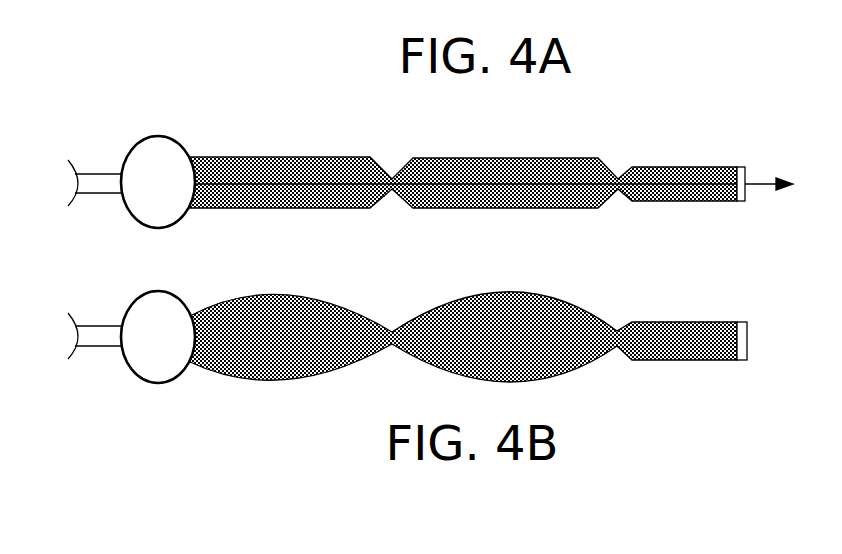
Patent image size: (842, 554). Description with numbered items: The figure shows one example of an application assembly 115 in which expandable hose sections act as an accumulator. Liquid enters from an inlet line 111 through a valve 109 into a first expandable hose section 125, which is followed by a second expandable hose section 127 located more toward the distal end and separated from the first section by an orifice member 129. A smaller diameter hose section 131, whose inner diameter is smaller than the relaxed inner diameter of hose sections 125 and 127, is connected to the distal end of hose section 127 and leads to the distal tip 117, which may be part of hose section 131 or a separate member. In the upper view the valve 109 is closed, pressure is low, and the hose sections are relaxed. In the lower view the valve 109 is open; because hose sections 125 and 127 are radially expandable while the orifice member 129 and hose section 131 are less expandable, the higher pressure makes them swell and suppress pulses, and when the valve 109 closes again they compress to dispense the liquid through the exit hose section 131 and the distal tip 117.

In FIG. 4A, the valve 109 is at (140, 220).
In FIG. 4B, the valve 109 is at (140, 375).
In FIG. 4A, the inlet tube 111 is at (103, 194).
In FIG. 4B, the inlet tube 111 is at (103, 347).
In FIG. 4A, the application assembly 115 is at (545, 147).
In FIG. 4B, the application assembly 115 is at (574, 282).
In FIG. 4A, the distal tip 117 is at (738, 165).
In FIG. 4B, the distal tip 117 is at (738, 323).
In FIG. 4A, the first expandable hose section 125 is at (318, 155).
In FIG. 4B, the first expandable hose section 125 is at (320, 298).
In FIG. 4A, the second expandable hose section 127 is at (465, 155).
In FIG. 4B, the second expandable hose section 127 is at (493, 292).
In FIG. 4A, the orifice member 129 is at (392, 176).
In FIG. 4B, the orifice member 129 is at (395, 327).
In FIG. 4A, the smaller diameter hose section 131 is at (647, 167).
In FIG. 4B, the smaller diameter hose section 131 is at (647, 322).